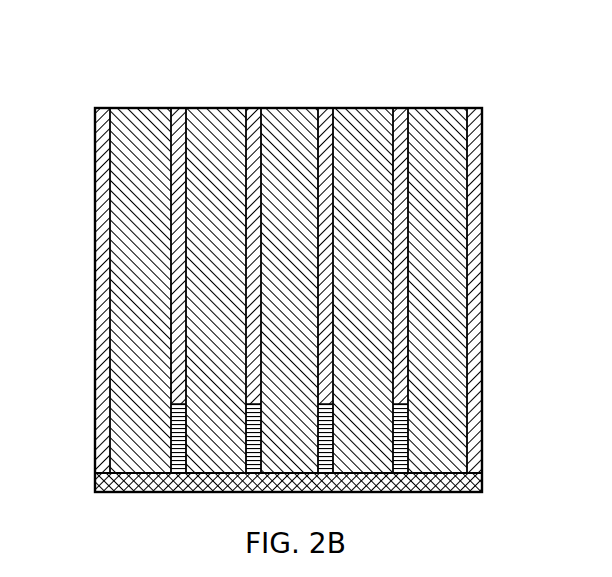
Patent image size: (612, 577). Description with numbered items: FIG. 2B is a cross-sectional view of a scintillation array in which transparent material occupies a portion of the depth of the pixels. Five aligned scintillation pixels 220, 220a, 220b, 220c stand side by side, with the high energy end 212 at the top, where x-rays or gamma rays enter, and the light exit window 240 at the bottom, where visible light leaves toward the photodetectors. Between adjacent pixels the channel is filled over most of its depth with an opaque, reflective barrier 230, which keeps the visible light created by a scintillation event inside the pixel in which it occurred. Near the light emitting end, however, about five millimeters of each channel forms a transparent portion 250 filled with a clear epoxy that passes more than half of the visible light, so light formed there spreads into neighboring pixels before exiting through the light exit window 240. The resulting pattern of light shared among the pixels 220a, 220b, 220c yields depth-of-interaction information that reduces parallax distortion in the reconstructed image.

The high energy end 212 is at (355, 98).
The pixel 220 is at (440, 250).
The pixel 220a is at (148, 128).
The pixel 220b is at (197, 120).
The pixel 220c is at (290, 118).
The reflective barrier 230 is at (478, 410).
The light exit window 240 is at (448, 490).
The transparent portion 250 is at (327, 450).